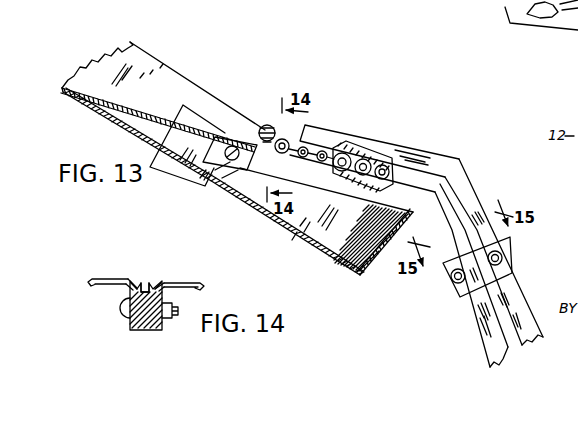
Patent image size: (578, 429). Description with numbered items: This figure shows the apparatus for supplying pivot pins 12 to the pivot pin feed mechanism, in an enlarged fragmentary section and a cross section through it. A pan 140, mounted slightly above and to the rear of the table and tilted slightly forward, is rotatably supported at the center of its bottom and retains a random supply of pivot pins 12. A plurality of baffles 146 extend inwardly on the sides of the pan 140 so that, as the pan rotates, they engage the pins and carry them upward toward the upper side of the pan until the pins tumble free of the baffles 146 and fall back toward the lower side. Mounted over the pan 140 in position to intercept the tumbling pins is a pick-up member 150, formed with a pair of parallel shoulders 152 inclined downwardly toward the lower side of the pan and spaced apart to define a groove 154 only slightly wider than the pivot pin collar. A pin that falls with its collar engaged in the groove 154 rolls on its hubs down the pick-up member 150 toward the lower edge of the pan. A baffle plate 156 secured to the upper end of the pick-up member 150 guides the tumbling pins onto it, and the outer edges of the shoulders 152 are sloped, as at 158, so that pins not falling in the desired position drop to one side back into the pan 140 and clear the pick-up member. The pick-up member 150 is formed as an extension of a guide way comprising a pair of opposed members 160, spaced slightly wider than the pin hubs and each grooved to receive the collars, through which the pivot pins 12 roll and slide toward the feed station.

In FIG. 13, the pivot pin 12 is at (341, 150).
In FIG. 13, the pan 140 is at (168, 80).
In FIG. 13, the baffle 146 is at (188, 115).
In FIG. 13, the pick-up member 150 is at (257, 165).
In FIG. 14, the pick-up member 150 is at (130, 318).
In FIG. 13, the shoulder 152 is at (259, 126).
In FIG. 14, the shoulder 152 is at (137, 286).
In FIG. 14, the groove 154 is at (145, 285).
In FIG. 13, the baffle plate 156 is at (125, 128).
In FIG. 14, the baffle plate 156 is at (93, 283).
In FIG. 14, the sloped outer edge 158 is at (130, 283).
In FIG. 13, the guide way member 160 is at (512, 310).